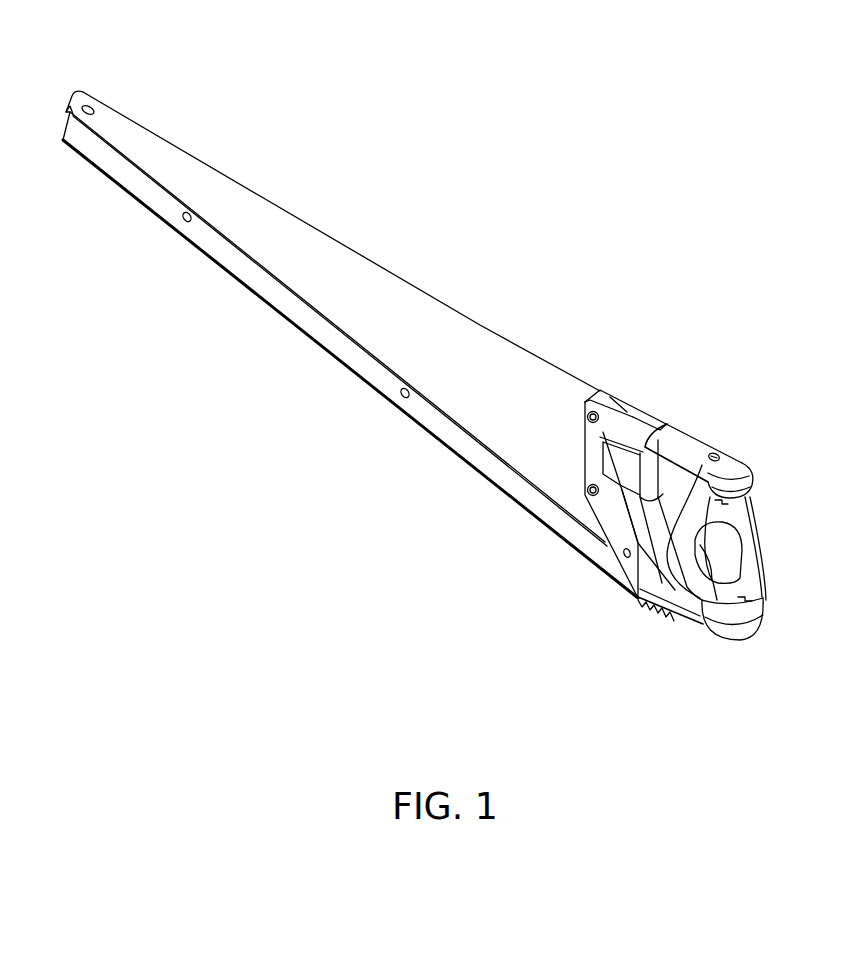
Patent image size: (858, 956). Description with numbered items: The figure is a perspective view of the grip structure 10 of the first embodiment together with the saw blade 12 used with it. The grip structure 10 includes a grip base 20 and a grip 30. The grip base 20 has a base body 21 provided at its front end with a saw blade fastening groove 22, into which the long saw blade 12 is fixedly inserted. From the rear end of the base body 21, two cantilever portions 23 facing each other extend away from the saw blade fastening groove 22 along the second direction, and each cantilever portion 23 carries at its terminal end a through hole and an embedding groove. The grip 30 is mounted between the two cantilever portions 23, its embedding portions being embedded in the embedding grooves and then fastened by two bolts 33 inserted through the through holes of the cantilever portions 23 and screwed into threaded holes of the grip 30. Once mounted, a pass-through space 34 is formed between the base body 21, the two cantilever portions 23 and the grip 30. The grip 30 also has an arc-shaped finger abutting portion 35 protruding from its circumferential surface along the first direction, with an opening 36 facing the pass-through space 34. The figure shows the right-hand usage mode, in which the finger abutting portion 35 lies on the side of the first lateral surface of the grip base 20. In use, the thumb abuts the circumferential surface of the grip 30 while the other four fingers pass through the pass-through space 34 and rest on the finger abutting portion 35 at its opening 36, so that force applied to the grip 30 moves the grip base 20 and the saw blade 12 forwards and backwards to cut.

The grip structure 10 is at (550, 624).
The saw blade 12 is at (380, 287).
The grip base 20 is at (608, 576).
The base body 21 is at (615, 518).
The saw blade fastening groove 22 is at (610, 392).
The cantilever portions 23 is at (731, 470).
The grip 30 is at (740, 587).
The bolts 33 is at (716, 453).
The pass-through space 34 is at (673, 488).
The finger abutting portion 35 is at (731, 550).
The opening 36 is at (698, 543).